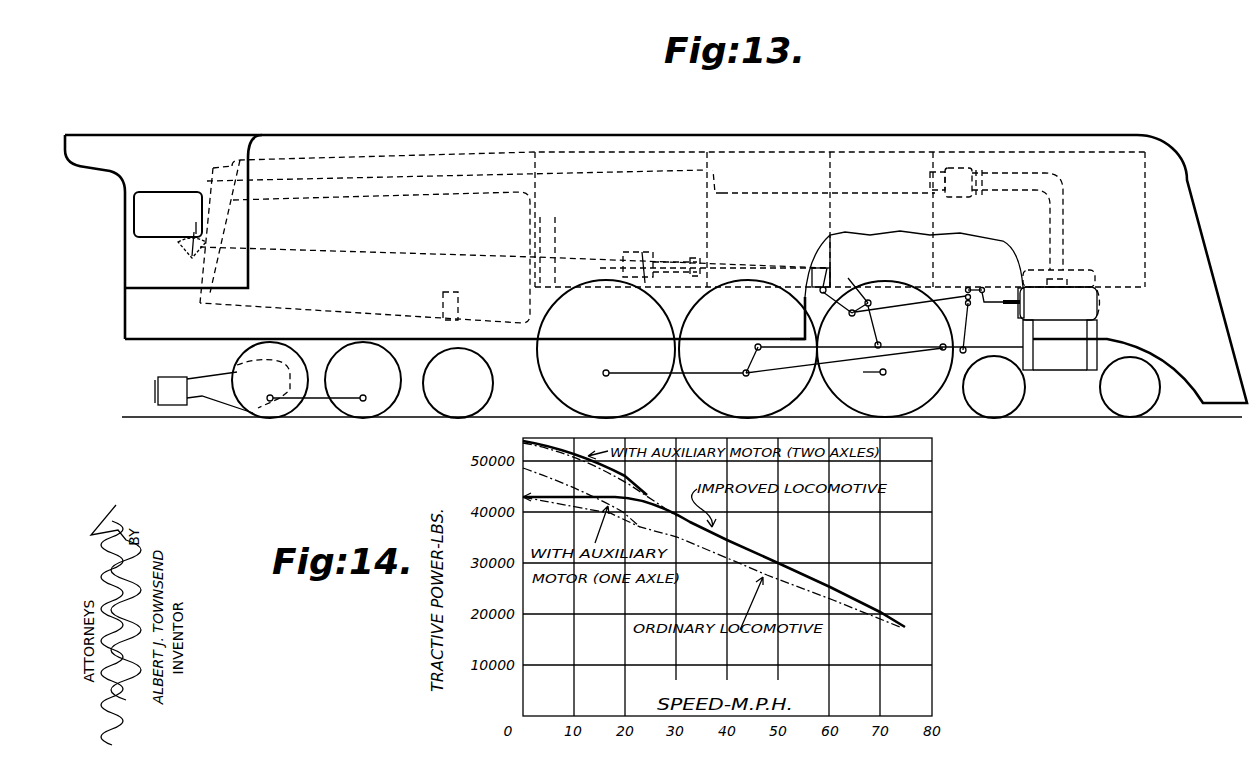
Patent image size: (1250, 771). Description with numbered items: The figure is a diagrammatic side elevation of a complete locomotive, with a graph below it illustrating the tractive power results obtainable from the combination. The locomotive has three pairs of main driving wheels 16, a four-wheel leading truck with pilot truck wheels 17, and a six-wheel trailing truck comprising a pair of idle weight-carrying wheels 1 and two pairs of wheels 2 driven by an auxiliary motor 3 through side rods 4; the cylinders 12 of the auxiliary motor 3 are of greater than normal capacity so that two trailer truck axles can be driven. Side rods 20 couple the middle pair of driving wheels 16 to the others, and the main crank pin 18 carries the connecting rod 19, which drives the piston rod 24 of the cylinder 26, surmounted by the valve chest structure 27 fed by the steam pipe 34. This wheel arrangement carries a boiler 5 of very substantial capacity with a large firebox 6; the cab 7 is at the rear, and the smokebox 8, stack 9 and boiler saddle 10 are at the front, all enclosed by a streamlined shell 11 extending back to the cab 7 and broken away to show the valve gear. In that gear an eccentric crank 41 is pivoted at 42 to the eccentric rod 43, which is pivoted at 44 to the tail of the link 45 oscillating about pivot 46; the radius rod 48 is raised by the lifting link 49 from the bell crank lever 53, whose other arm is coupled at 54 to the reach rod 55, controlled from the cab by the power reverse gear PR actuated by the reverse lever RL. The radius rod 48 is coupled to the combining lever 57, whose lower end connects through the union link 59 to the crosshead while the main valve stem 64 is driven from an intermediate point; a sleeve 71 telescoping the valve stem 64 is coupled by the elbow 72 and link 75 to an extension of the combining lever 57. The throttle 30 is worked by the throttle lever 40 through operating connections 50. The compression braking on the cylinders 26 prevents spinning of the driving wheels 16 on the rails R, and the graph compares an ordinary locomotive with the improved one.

The idle weight-carrying wheels 1 is at (458, 408).
The trailing truck wheels 2 is at (350, 408).
The auxiliary motor 3 is at (218, 388).
The side rods 4 is at (312, 397).
The boiler 5 is at (603, 152).
The firebox 6 is at (672, 237).
The cab 7 is at (173, 143).
The smokebox 8 is at (1039, 219).
The stack 9 is at (1083, 140).
The boiler saddle 10 is at (1068, 272).
The streamlined shell 11 is at (1209, 297).
The cylinders of auxiliary motor 12 is at (168, 380).
The driving wheels 16 is at (645, 388).
The pilot truck wheels 17 is at (997, 405).
The main crank pin 18 is at (746, 377).
The connecting rod 19 is at (907, 353).
The side rods 20 is at (638, 371).
The piston rod 24 is at (997, 349).
The cylinder 26 is at (1077, 360).
The valve chest structure 27 is at (1029, 306).
The throttle 30 is at (963, 165).
The steam pipe 34 is at (1067, 202).
The throttle lever 40 is at (188, 197).
The eccentric crank 41 is at (743, 358).
The pivot 42 is at (758, 343).
The eccentric rod 43 is at (803, 338).
The pivot 44 is at (881, 344).
The link 45 is at (860, 280).
The link pivot 46 is at (871, 303).
The radius rod 48 is at (905, 306).
The lifting link 49 is at (834, 313).
The operating connections 50 is at (742, 190).
The bell crank lever 53 is at (830, 283).
The pivot 54 is at (814, 269).
The reach rod 55 is at (737, 271).
The combining lever 57 is at (972, 318).
The union link 59 is at (960, 355).
The main valve stem 64 is at (998, 304).
The sleeve 71 is at (1010, 288).
The elbow 72 is at (985, 288).
The link 75 is at (977, 287).
The power reverse gear PR is at (652, 262).
The reverse lever RL is at (196, 228).
The rails R is at (1059, 420).